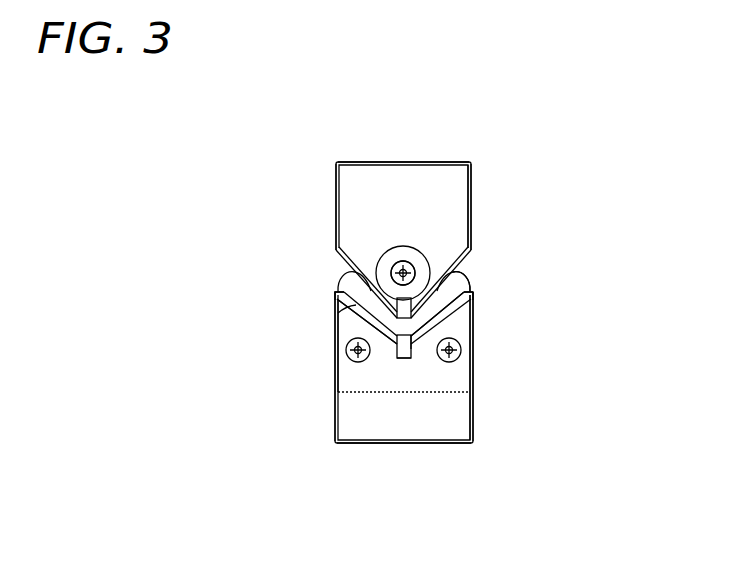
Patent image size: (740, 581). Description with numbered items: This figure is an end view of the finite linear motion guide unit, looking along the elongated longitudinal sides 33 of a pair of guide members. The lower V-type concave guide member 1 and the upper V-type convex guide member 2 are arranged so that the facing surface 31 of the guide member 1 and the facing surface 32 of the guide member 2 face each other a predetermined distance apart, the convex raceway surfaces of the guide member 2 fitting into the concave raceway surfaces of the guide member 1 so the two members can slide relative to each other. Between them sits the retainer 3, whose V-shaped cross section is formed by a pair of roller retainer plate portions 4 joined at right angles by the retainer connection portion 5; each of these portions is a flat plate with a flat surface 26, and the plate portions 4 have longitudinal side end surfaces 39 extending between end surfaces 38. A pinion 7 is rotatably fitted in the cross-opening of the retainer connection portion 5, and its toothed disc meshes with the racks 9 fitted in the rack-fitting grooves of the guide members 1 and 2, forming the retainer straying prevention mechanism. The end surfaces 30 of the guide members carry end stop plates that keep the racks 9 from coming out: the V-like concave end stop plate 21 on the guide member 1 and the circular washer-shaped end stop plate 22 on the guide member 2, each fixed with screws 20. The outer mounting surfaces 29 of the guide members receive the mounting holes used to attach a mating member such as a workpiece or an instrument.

The V-type concave guide member 1 is at (360, 426).
The V-type convex guide member 2 is at (346, 196).
The retainer 3 is at (470, 283).
The roller retainer plate portion 4 is at (345, 281).
The retainer connection portion 5 is at (414, 340).
The pinion 7 is at (397, 348).
The rack 9 is at (403, 359).
The screw 20 is at (346, 350).
The end stop plate 21 is at (352, 375).
The end stop plate 22 is at (383, 259).
The flat surface 26 is at (397, 338).
The mounting surface 29 is at (337, 205).
The end surface 30 is at (456, 183).
The facing surface 31 is at (340, 296).
The facing surface 32 is at (466, 294).
The elongated longitudinal side 33 is at (408, 162).
The end surface 38 is at (437, 302).
The longitudinal side end surface 39 is at (468, 278).